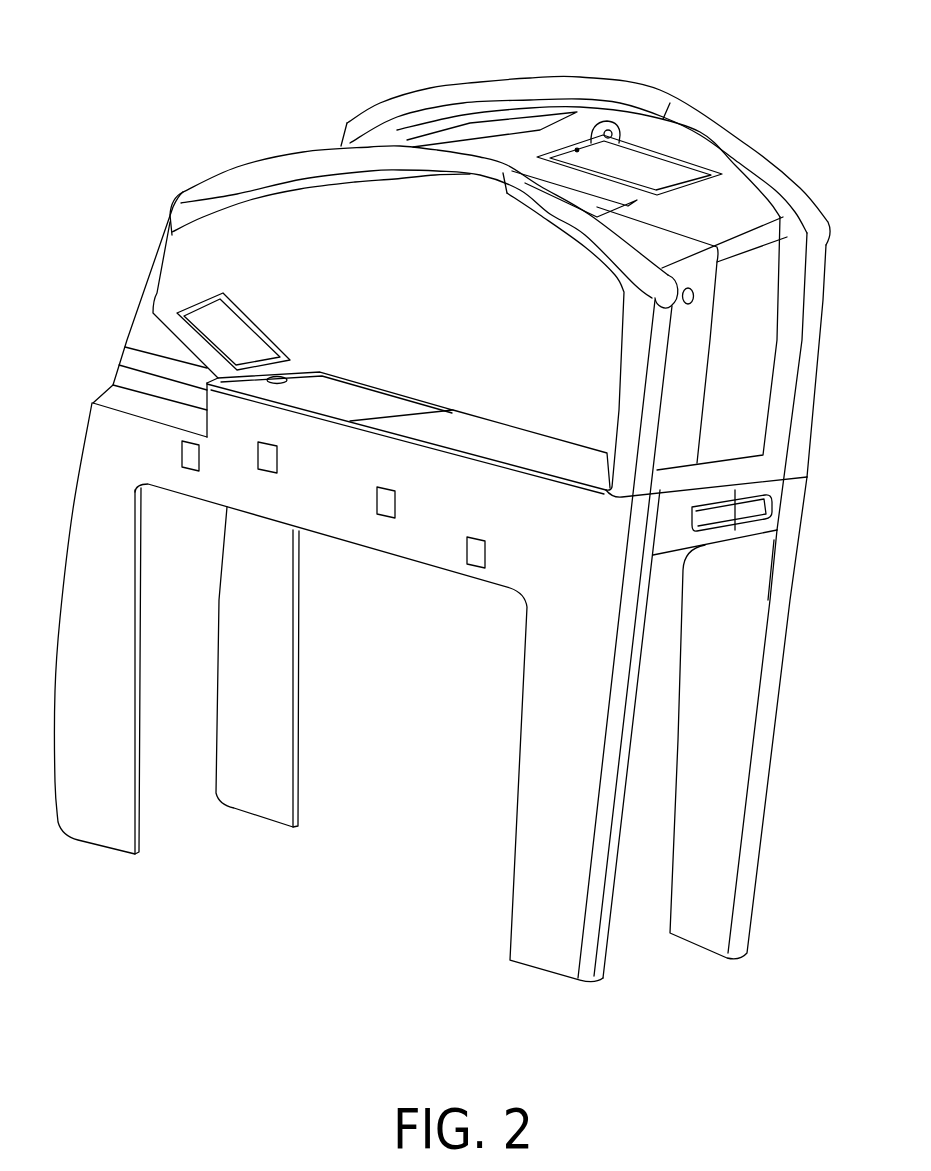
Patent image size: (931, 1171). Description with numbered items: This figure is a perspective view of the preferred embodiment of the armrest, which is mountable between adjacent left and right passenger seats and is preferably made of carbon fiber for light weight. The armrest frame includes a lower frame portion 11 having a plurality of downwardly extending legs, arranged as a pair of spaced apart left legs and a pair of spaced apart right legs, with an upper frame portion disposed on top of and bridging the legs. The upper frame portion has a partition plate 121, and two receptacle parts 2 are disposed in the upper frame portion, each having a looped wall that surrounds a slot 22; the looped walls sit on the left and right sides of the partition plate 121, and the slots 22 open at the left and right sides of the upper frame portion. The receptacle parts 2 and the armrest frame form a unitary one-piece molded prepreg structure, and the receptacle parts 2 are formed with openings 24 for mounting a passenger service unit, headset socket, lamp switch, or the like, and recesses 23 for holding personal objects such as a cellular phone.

The receptacle part 2 is at (722, 223).
The lower frame portion 11 is at (766, 826).
The partition plate 121 is at (307, 218).
The slot 22 is at (283, 279).
The recess 23 is at (346, 406).
The opening 24 is at (210, 322).